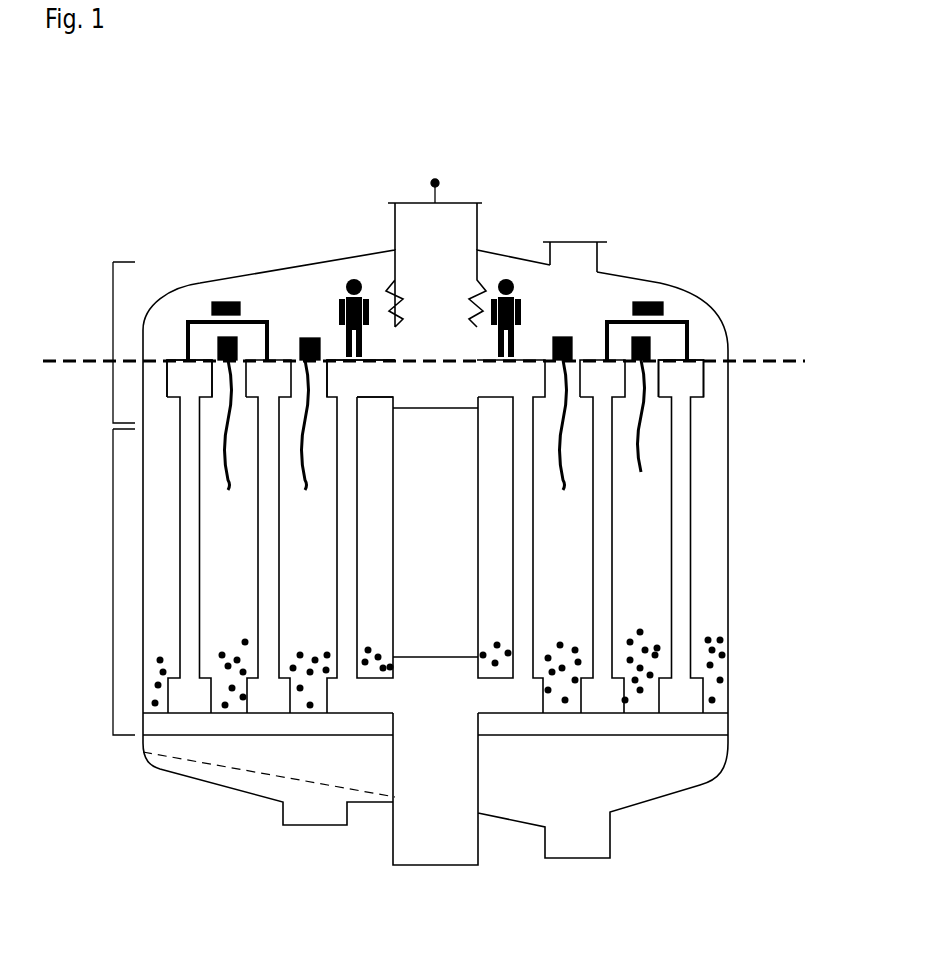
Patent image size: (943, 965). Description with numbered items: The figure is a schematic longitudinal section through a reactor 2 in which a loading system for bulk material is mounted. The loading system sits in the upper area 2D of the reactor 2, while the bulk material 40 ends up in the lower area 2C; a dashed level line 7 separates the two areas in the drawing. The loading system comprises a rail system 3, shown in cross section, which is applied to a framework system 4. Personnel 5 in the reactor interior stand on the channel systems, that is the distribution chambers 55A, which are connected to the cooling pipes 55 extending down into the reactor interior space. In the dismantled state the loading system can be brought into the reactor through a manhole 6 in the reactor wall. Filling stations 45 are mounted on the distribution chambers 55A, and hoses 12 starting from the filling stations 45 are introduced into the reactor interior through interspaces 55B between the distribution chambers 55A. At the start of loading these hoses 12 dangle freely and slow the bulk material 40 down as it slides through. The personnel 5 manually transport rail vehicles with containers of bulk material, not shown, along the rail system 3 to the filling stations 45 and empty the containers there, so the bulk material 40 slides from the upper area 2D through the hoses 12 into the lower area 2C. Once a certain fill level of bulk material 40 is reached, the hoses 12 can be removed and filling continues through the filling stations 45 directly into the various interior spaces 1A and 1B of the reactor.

The interior space 1A is at (700, 536).
The interior space 1B is at (290, 593).
The reactor 2 is at (627, 808).
The lower area 2C is at (95, 582).
The upper area 2D is at (113, 345).
The rail system 3 is at (226, 300).
The framework system 4 is at (253, 320).
The personnel 5 is at (355, 279).
The manhole 6 is at (572, 241).
The partition level line 7 is at (45, 358).
The hose 12 is at (306, 500).
The bulk material 40 is at (223, 647).
The filling station 45 is at (566, 335).
The cooling pipe 55 is at (682, 541).
The distribution chamber 55A is at (684, 377).
The interspace 55B is at (237, 367).